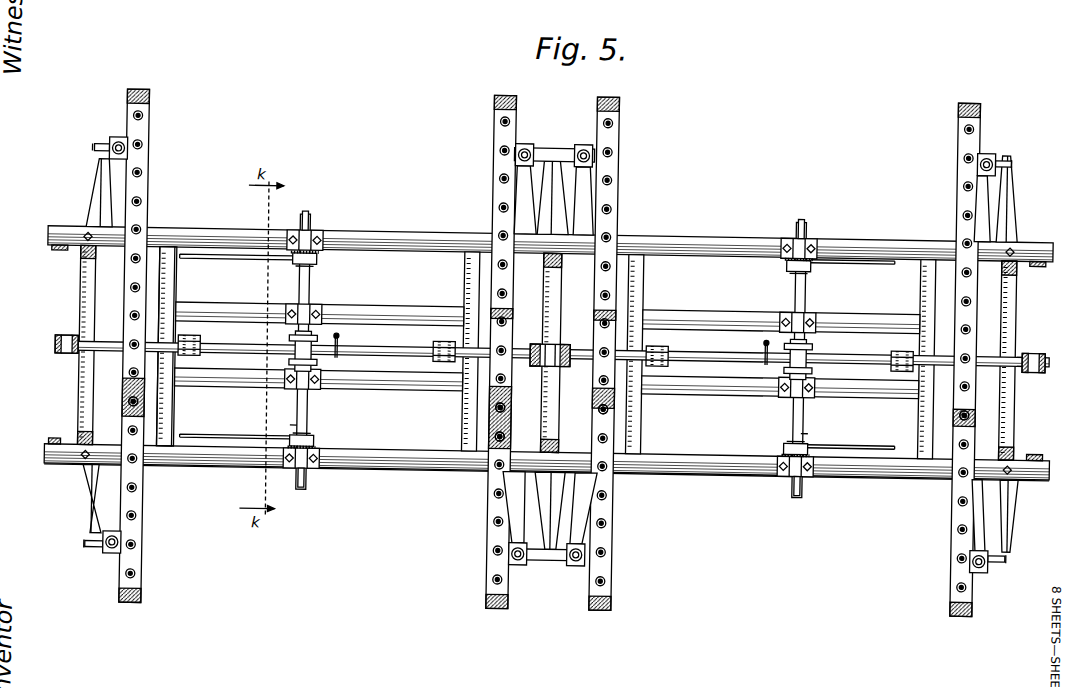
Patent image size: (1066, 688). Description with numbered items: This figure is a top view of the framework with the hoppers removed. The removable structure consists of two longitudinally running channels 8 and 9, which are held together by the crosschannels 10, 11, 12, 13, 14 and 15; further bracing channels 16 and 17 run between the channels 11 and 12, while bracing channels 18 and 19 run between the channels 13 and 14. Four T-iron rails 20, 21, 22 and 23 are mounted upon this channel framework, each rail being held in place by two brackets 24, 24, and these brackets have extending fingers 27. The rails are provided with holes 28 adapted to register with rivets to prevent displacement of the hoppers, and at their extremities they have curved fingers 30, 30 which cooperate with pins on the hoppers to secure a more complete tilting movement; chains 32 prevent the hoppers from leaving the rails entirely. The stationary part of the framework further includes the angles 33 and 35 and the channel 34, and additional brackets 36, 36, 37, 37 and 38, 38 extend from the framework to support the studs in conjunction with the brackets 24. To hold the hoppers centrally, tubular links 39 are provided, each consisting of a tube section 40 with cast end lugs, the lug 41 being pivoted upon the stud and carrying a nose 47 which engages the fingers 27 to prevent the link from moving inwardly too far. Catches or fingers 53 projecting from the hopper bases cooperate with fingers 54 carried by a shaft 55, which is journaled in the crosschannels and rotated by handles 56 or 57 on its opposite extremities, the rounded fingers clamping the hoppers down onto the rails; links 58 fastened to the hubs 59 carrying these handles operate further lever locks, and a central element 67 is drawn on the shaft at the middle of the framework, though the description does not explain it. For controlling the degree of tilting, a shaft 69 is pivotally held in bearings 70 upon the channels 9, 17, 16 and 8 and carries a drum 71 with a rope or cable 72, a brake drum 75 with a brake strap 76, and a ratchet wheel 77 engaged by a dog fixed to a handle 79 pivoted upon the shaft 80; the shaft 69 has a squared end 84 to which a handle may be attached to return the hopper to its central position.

The channel 8 is at (412, 465).
The channel 9 is at (396, 231).
The crosschannel 10 is at (85, 296).
The crosschannel 11 is at (176, 292).
The crosschannel 12 is at (462, 290).
The crosschannel 13 is at (644, 290).
The crosschannel 14 is at (919, 300).
The crosschannel 15 is at (1016, 300).
The bracing channel 16 is at (393, 386).
The bracing channel 17 is at (384, 302).
The bracing channel 18 is at (728, 386).
The bracing channel 19 is at (732, 307).
The rail 20 is at (148, 500).
The rail 21 is at (118, 477).
The rail 22 is at (617, 470).
The rail 23 is at (955, 500).
The bracket 24 is at (121, 223).
The finger 27 is at (143, 168).
The hole 28 is at (133, 232).
The curved finger 30 is at (144, 99).
The chain 32 is at (339, 337).
The angle 33 is at (81, 257).
The channel 34 is at (542, 262).
The angle 35 is at (1016, 261).
The bracket 36 is at (94, 200).
The bracket 37 is at (545, 165).
The bracket 38 is at (1009, 218).
The link 39 is at (115, 135).
The tube section 40 is at (124, 139).
The end lug 41 is at (102, 143).
The nose 47 is at (108, 158).
The catch or finger 53 is at (420, 340).
The finger 54 is at (446, 333).
The shaft 55 is at (240, 350).
The handle 56 is at (1042, 346).
The handle 57 is at (58, 344).
The link 58 is at (69, 353).
The hub 59 is at (68, 334).
The central coupling 67 is at (555, 340).
The shaft 69 is at (308, 296).
The bearing 70 is at (311, 228).
The drum 71 is at (314, 360).
The rope or cable 72 is at (291, 333).
The brake drum 75 is at (316, 262).
The brake strap 76 is at (316, 256).
The ratchet wheel 77 is at (318, 251).
The handle 79 is at (248, 255).
The shaft 80 is at (294, 420).
The squared end 84 is at (303, 211).